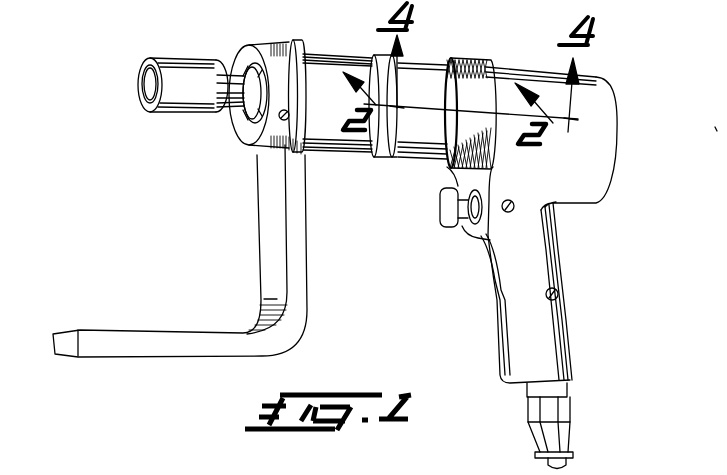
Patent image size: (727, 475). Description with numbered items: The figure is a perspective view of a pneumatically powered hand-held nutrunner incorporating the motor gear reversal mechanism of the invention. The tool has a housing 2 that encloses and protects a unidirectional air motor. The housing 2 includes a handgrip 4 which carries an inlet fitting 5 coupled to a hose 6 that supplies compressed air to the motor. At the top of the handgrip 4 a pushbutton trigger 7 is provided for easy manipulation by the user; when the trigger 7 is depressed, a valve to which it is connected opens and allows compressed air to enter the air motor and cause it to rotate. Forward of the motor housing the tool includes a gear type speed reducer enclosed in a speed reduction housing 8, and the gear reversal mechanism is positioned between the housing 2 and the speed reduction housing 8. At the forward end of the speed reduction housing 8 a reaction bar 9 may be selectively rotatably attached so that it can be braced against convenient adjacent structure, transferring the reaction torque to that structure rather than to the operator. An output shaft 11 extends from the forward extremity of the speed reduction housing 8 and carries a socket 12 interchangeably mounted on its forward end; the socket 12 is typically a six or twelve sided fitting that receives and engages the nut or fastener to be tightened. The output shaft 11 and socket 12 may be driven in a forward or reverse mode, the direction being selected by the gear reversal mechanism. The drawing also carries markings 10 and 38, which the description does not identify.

The housing 2 is at (604, 147).
The handgrip 4 is at (523, 322).
The inlet fitting 5 is at (563, 395).
The hose 6 is at (568, 464).
The pushbutton trigger 7 is at (446, 204).
The speed reduction housing 8 is at (353, 56).
The reaction bar 9 is at (270, 269).
The torque tool 10 is at (459, 40).
The output shaft 11 is at (230, 74).
The socket 12 is at (167, 56).
The knurled adjusting ring 38 is at (473, 78).